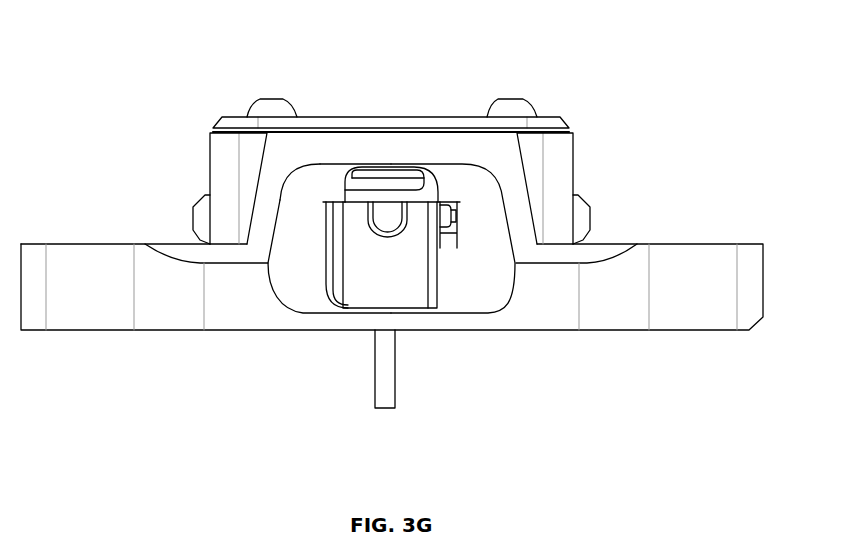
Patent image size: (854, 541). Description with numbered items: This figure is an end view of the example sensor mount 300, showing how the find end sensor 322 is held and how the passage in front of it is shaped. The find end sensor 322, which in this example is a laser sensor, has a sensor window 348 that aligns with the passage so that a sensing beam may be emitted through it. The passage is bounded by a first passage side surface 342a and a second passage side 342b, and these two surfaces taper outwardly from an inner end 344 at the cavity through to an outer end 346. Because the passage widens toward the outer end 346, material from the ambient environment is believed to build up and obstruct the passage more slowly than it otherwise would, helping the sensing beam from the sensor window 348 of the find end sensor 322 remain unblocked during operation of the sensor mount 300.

The mounting assembly 300 is at (699, 63).
The find end sensor 322 is at (440, 270).
The first passage side surface 342a is at (293, 252).
The second passage side 342b is at (487, 232).
The inner end 344 is at (333, 298).
The outer end 346 is at (277, 217).
The sensor window 348 is at (388, 220).